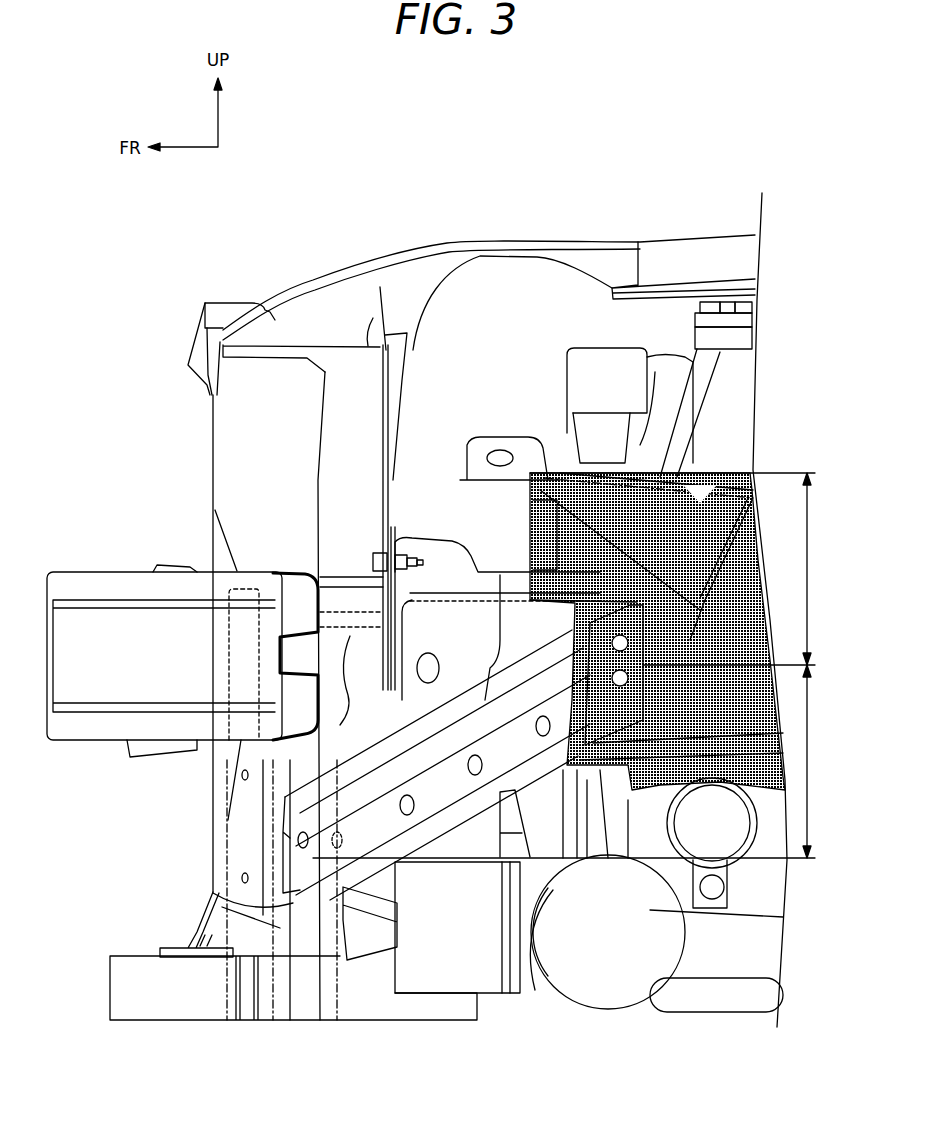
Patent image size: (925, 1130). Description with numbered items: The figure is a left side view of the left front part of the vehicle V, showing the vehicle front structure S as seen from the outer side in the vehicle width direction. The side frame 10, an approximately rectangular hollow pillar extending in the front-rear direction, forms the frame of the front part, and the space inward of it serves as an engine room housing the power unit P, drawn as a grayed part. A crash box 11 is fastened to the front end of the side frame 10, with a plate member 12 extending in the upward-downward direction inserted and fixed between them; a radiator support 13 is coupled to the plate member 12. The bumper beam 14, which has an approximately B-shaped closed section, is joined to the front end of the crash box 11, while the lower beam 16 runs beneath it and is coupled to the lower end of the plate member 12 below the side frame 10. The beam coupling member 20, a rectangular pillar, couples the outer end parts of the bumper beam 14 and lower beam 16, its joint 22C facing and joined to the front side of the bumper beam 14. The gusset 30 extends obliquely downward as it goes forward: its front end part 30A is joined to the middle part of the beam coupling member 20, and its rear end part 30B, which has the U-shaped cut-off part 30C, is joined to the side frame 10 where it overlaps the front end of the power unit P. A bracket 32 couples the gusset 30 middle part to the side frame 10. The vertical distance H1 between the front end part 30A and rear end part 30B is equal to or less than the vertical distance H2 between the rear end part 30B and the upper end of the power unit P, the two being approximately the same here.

The side frame 10 is at (500, 572).
The crash box 11 is at (325, 573).
The plate member 12 is at (345, 366).
The radiator support 13 is at (240, 458).
The bumper beam 14 is at (100, 571).
The lower beam 16 is at (118, 955).
The beam coupling member 20 is at (220, 778).
The joint 22C is at (240, 633).
The gusset 30 is at (347, 887).
The front end part of the gusset 30A is at (323, 870).
The rear end part of the gusset 30B is at (635, 795).
The cut-off part 30C is at (578, 835).
The bracket 32 is at (433, 993).
The power unit P is at (548, 475).
The vehicle front structure S is at (162, 275).
The vehicle V is at (537, 178).
The vertical distance H1 is at (577, 761).
The vertical distance H2 is at (685, 569).